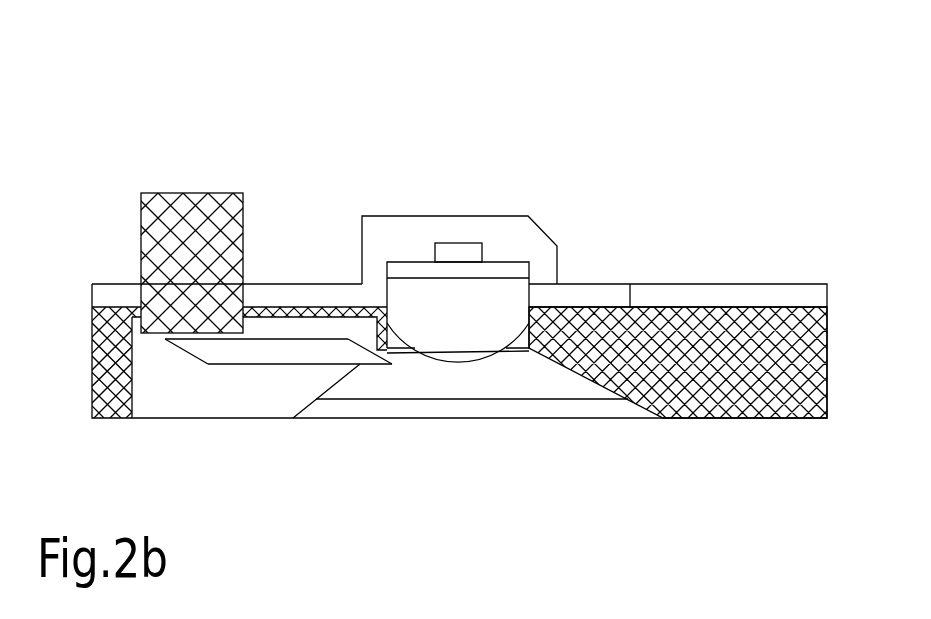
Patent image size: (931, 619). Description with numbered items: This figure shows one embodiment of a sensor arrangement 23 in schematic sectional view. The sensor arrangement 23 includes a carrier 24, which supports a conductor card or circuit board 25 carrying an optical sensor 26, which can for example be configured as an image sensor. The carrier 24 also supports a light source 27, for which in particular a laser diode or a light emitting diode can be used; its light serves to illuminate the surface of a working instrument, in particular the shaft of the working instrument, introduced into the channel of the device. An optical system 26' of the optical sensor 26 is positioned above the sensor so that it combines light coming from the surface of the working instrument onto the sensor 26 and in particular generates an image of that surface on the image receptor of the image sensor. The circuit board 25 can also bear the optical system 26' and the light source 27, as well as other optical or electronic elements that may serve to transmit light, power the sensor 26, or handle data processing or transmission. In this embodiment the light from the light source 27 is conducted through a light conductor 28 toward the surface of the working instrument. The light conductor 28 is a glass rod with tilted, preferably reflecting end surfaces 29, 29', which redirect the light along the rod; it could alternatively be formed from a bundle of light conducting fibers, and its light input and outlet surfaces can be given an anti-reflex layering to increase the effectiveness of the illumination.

The sensor arrangement 23 is at (491, 99).
The carrier 24 is at (753, 335).
The circuit board 25 is at (605, 297).
The optical sensor 26 is at (476, 187).
The optical system 26' is at (458, 206).
The light source 27 is at (157, 193).
The light conductor 28 is at (255, 353).
The end surface 29 is at (164, 412).
The end surface 29' is at (342, 418).